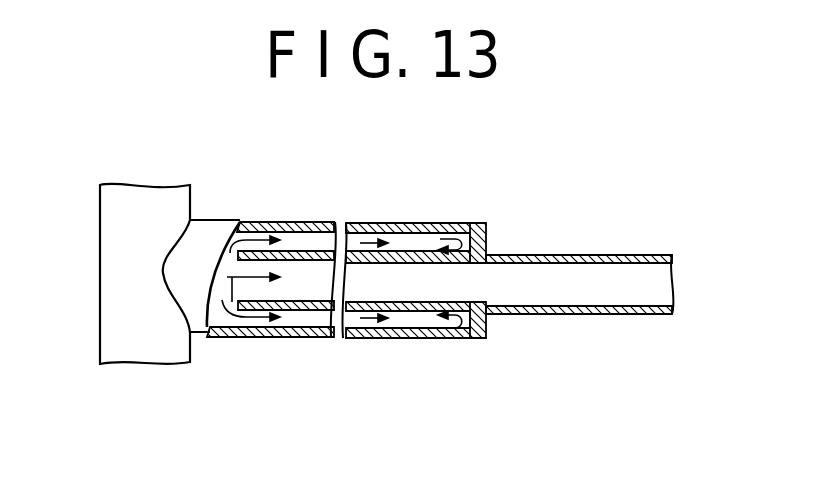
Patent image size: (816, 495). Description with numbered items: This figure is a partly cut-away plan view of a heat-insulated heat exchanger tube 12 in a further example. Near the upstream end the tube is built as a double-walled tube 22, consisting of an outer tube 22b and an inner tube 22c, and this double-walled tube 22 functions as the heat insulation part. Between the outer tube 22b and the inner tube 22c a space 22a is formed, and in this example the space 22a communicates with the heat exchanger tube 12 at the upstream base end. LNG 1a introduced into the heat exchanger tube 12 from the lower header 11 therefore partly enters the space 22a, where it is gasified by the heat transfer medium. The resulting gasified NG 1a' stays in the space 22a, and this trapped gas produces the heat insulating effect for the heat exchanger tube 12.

The lower header 11 is at (108, 279).
The heat exchanger tube 12 is at (608, 256).
The double-walled tube 22 is at (443, 227).
The space 22a is at (400, 232).
The outer tube 22b is at (270, 222).
The inner tube 22c is at (452, 266).
The LNG 1a is at (277, 324).
The gasified NG 1a' is at (425, 353).